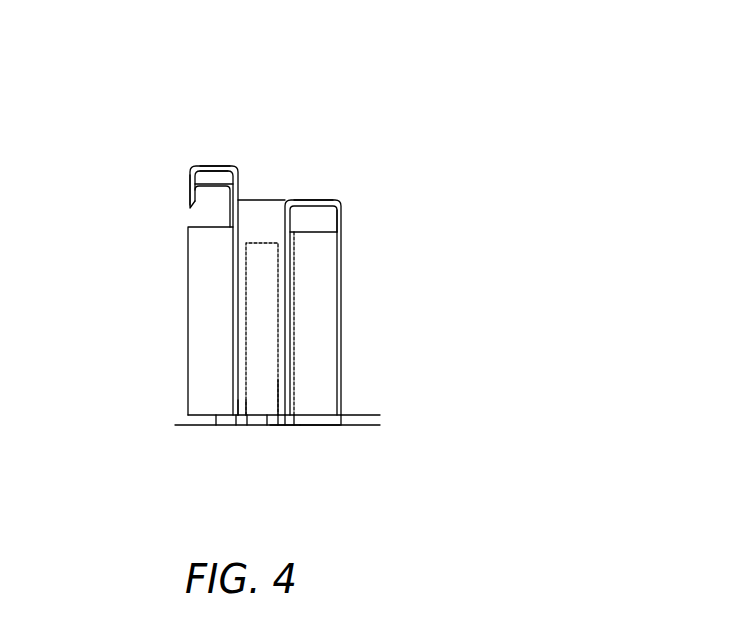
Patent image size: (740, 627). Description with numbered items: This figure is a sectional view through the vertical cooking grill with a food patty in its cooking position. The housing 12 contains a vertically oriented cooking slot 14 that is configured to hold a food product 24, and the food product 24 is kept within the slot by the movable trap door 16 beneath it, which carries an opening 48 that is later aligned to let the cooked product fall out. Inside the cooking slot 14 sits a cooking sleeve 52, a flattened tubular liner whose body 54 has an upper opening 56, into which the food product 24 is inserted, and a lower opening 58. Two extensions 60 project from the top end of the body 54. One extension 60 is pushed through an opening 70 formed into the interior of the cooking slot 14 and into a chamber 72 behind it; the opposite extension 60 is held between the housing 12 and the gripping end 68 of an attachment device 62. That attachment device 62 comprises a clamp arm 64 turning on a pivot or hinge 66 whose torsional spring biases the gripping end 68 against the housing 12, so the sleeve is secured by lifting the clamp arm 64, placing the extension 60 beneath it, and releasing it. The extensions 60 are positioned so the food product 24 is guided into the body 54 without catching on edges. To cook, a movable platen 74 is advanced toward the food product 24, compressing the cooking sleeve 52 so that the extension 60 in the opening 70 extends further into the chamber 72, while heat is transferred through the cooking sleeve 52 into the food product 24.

The housing 12 is at (247, 190).
The cooking slot 14 is at (280, 417).
The trap door 16 is at (310, 425).
The food product 24 is at (273, 390).
The opening 48 is at (188, 423).
The cooking sleeve 52 is at (290, 313).
The body 54 is at (235, 346).
The upper opening 56 is at (275, 226).
The lower opening 58 is at (240, 420).
The extension 60 is at (213, 186).
The attachment device 62 is at (196, 155).
The clamp arm 64 is at (218, 166).
The pivot or hinge 66 is at (190, 173).
The gripping end 68 is at (233, 172).
The opening 70 is at (300, 210).
The chamber 72 is at (318, 220).
The movable platen 74 is at (322, 350).